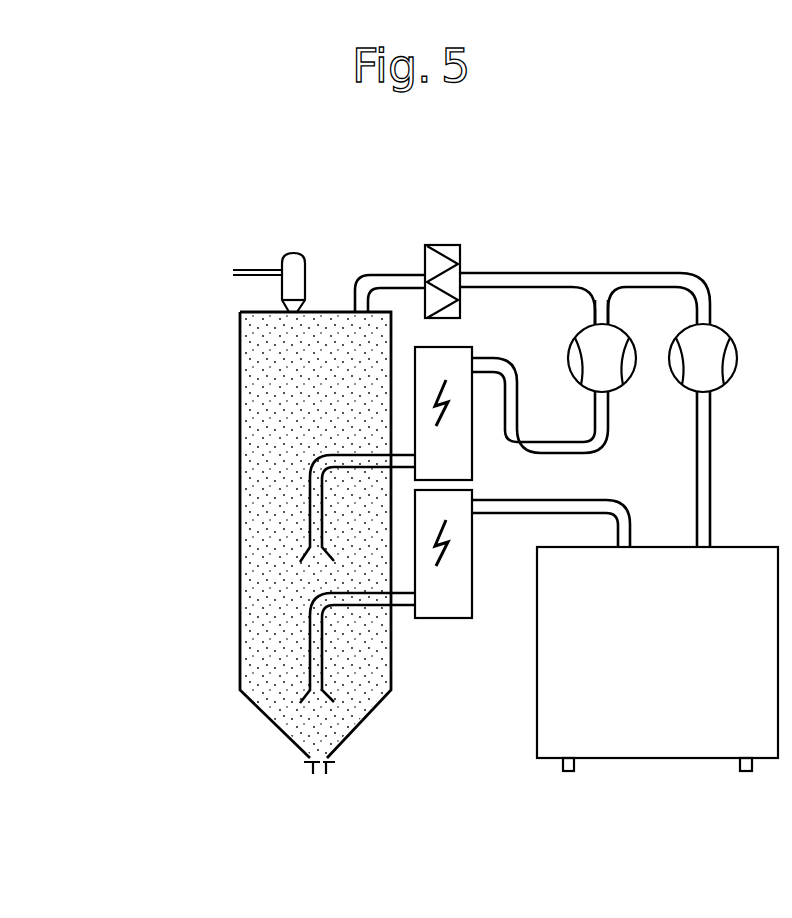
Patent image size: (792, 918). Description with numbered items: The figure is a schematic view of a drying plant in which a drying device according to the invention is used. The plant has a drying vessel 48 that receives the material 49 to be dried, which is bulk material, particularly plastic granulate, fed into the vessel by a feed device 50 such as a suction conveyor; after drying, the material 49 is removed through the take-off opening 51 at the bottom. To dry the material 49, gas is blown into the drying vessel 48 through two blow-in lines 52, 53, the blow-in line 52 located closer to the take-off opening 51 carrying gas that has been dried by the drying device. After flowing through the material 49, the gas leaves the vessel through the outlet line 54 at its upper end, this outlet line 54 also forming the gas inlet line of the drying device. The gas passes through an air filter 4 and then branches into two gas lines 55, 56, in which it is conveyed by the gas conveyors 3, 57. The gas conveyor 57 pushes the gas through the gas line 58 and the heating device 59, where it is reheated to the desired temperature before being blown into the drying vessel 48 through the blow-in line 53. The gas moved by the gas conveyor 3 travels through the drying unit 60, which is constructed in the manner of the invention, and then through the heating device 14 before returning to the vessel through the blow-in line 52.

The gas conveyor 3 is at (713, 347).
The air filter 4 is at (453, 256).
The heating device 14 is at (440, 594).
The drying vessel 48 is at (240, 440).
The material to be dried 49 is at (268, 367).
The feed device 50 is at (296, 283).
The take-off opening 51 is at (310, 762).
The blow-in line 52 is at (312, 646).
The blow-in line 53 is at (315, 505).
The outlet line 54 is at (384, 279).
The gas line 55 is at (666, 280).
The gas line 56 is at (606, 353).
The gas conveyor 57 is at (604, 308).
The gas line 58 is at (502, 371).
The heating device 59 is at (458, 365).
The drying unit 60 is at (673, 703).